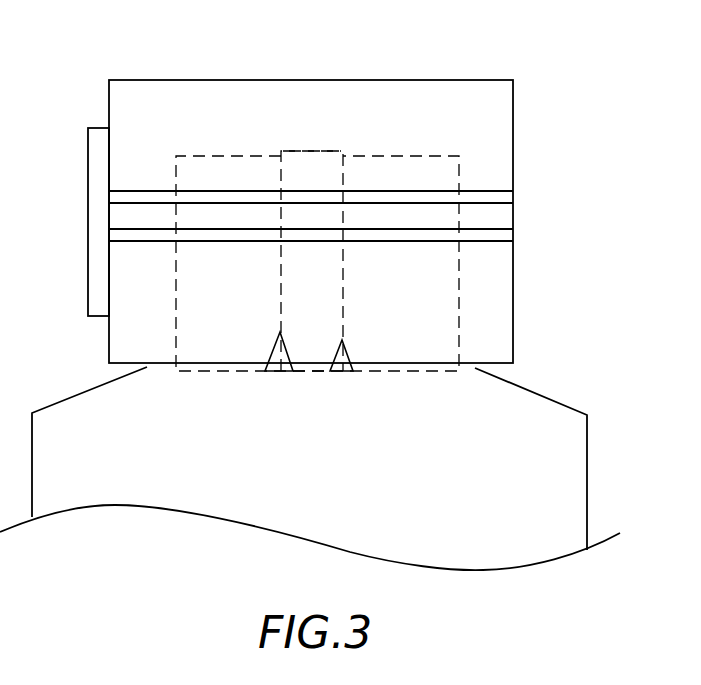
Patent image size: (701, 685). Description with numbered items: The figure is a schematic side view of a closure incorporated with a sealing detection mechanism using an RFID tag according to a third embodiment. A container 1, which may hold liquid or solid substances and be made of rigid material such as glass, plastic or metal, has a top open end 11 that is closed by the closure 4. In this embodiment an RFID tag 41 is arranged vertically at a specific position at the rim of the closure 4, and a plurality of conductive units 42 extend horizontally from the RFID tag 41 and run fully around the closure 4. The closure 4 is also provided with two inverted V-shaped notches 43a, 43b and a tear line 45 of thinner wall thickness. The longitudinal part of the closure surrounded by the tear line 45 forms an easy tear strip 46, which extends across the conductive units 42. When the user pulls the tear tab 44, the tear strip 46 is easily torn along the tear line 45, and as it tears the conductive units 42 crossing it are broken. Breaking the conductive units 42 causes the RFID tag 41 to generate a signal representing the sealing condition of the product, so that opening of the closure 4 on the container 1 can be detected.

The container 1 is at (580, 478).
The closure 4 is at (184, 80).
The top open end 11 is at (433, 154).
The RFID tag 41 is at (100, 165).
The conductive units 42 is at (510, 197).
The inverted V-shaped notch 43a is at (275, 368).
The inverted V-shaped notch 43b is at (348, 372).
The tear tab 44 is at (310, 372).
The tear line 45 is at (297, 148).
The tear strip 46 is at (330, 167).